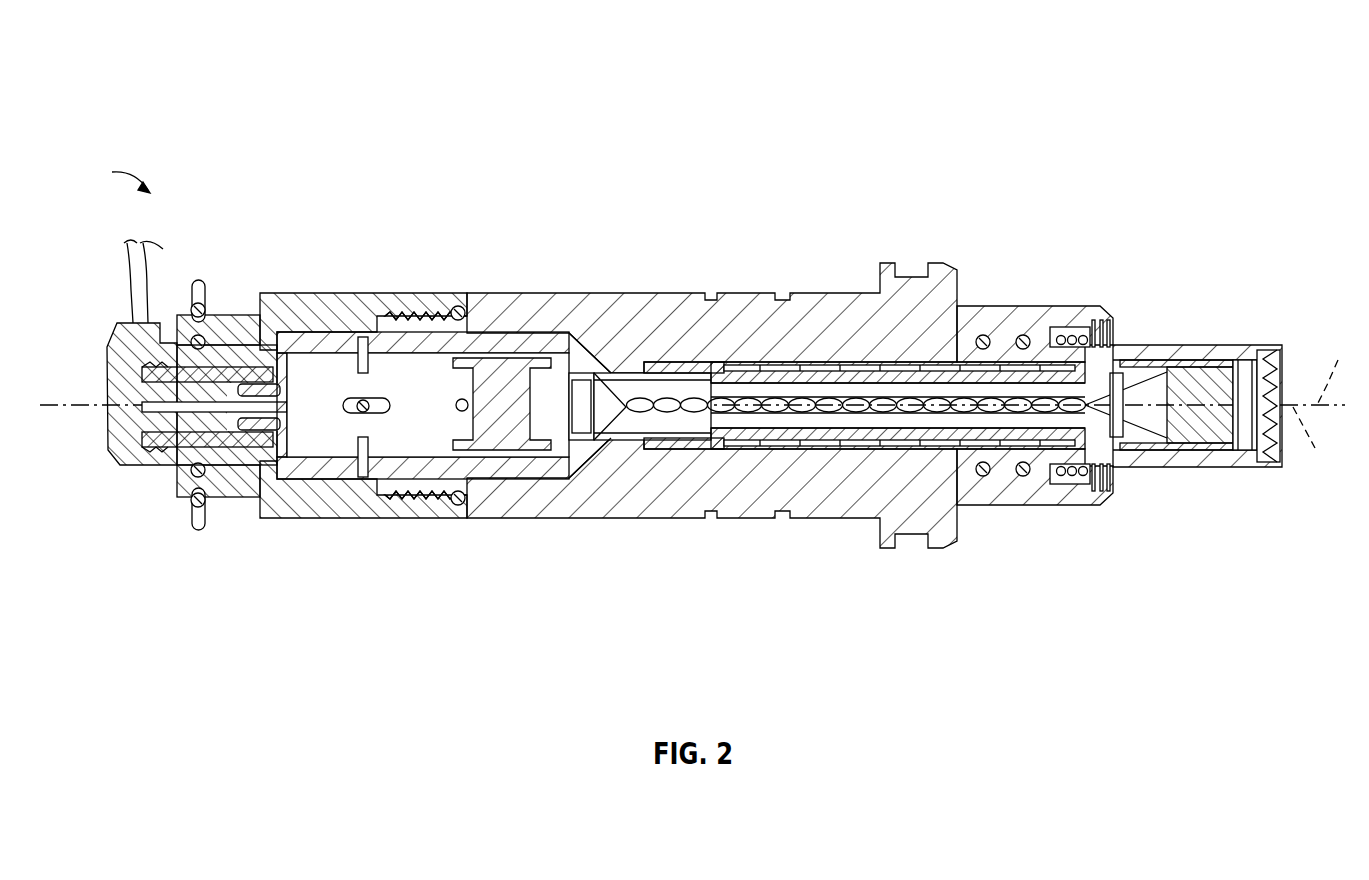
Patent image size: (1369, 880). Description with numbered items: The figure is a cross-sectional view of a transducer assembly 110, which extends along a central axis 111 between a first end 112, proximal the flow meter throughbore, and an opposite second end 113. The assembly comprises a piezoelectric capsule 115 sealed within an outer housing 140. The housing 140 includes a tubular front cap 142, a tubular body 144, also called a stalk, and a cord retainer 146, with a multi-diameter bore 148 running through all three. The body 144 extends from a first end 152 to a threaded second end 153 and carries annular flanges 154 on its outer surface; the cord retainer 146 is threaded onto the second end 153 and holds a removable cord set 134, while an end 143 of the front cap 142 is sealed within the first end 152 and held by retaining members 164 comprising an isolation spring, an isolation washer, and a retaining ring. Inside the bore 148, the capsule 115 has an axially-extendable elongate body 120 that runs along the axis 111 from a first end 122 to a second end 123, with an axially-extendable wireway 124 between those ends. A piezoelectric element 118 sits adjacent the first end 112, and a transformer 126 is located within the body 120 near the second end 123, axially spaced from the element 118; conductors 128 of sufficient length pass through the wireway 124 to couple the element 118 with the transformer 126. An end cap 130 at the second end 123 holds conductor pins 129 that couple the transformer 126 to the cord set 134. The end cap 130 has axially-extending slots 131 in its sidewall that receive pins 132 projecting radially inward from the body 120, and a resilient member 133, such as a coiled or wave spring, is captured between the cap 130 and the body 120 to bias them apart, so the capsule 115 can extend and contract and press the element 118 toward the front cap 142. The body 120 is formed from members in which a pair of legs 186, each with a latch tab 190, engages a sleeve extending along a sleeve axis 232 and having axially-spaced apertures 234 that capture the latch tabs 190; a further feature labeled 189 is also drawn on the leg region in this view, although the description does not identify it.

The transducer assembly 110 is at (107, 174).
The central axis 111 is at (1315, 447).
The first end 112 is at (1267, 345).
The second end 113 is at (180, 500).
The piezoelectric capsule 115 is at (650, 300).
The piezoelectric element 118 is at (1202, 435).
The elongate body 120 is at (1153, 360).
The first end 122 is at (1213, 367).
The second end 123 is at (300, 462).
The wireway 124 is at (683, 412).
The transformer 126 is at (507, 440).
The conductors 128 is at (600, 420).
The conductor pins 129 is at (232, 482).
The end cap 130 is at (308, 330).
The slots 131 is at (345, 462).
The pins 132 is at (365, 460).
The resilient member 133 is at (345, 430).
The cord set 134 is at (122, 448).
The housing 140 is at (283, 292).
The front cap 142 is at (1170, 353).
The end 143 is at (1000, 330).
The tubular body 144 is at (528, 305).
The cord retainer 146 is at (247, 322).
The multi-diameter bore 148 is at (630, 467).
The first end 152 is at (1058, 330).
The threaded second end 153 is at (418, 308).
The annular flanges 154 is at (943, 262).
The retaining members 164 is at (1098, 490).
The legs 186 is at (810, 432).
The bore 189 is at (870, 420).
The latch tab 190 is at (727, 447).
The sleeve axis 232 is at (1339, 366).
The apertures 234 is at (723, 437).